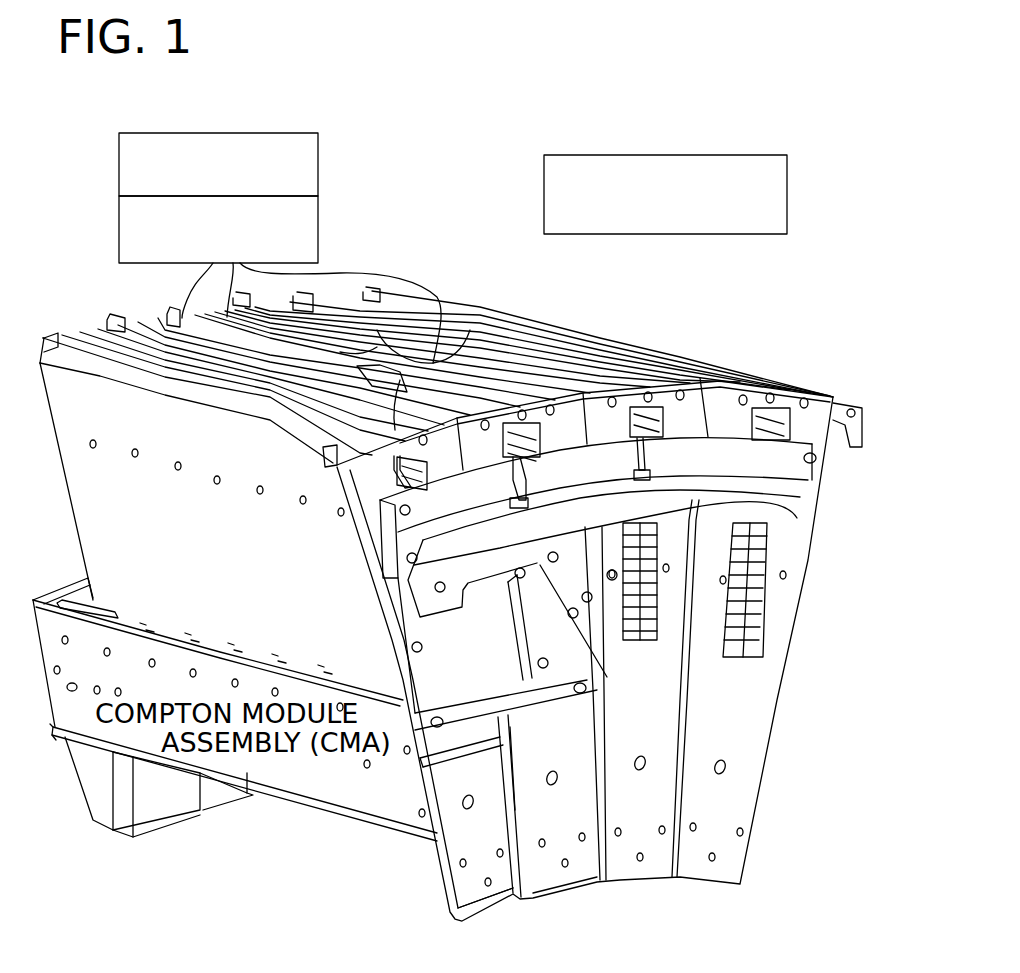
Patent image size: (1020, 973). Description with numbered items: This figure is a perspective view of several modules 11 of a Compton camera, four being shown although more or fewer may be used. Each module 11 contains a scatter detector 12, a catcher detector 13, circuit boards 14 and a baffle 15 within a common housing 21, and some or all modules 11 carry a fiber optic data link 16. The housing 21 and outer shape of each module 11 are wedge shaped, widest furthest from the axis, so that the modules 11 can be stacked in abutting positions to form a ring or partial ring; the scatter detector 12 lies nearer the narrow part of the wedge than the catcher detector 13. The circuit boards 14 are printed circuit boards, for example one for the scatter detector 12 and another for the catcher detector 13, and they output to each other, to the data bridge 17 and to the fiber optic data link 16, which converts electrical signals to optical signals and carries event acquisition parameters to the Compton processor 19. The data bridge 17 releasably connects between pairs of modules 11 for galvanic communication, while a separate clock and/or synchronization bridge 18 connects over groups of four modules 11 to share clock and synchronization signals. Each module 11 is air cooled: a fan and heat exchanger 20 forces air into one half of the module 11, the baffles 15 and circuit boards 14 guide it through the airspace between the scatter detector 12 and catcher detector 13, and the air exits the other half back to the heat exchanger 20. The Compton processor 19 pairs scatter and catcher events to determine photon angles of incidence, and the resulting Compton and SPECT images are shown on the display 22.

The module 11 is at (737, 717).
The scatter detector 12 is at (452, 908).
The catcher detector 13 is at (423, 765).
The circuit board 14 is at (377, 347).
The baffle 15 is at (400, 380).
The fiber optic data link 16 is at (395, 470).
The data bridge 17 is at (523, 593).
The clock and/or synchronization bridge 18 is at (693, 468).
The Compton processor 19 is at (280, 279).
The fan and heat exchanger 20 is at (627, 330).
The housing 21 is at (97, 489).
The display 22 is at (218, 225).